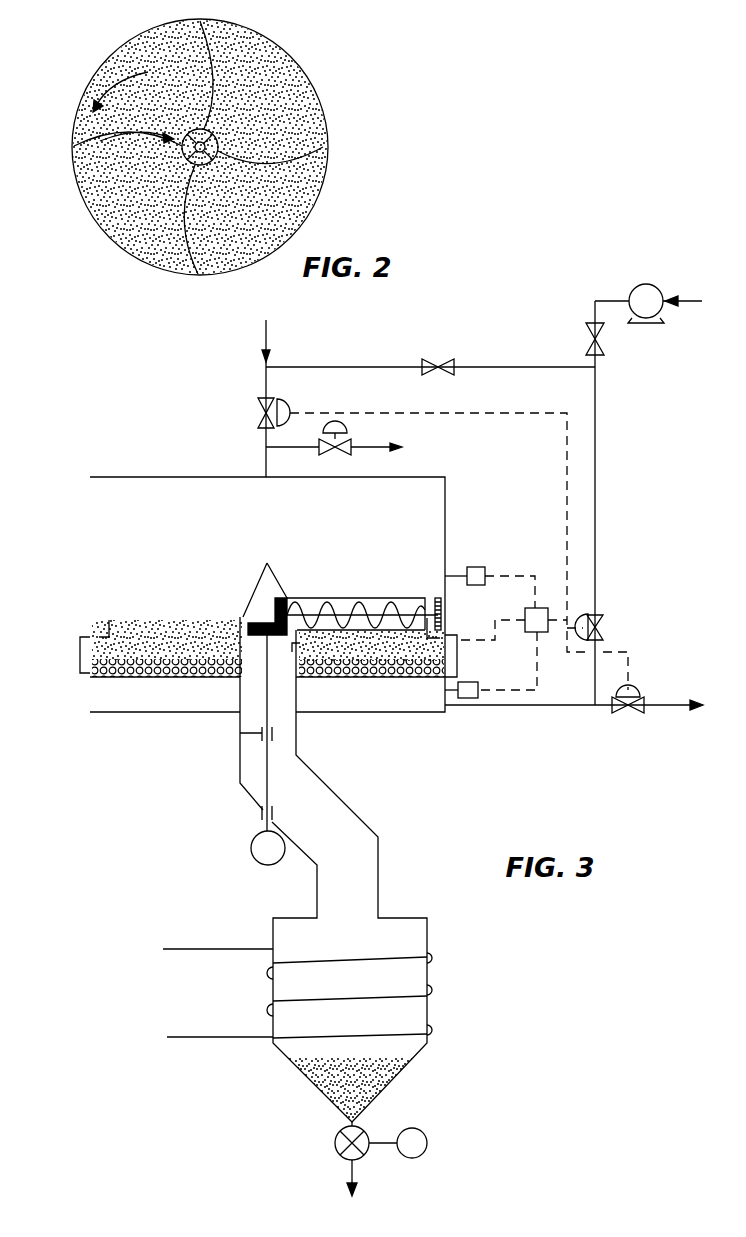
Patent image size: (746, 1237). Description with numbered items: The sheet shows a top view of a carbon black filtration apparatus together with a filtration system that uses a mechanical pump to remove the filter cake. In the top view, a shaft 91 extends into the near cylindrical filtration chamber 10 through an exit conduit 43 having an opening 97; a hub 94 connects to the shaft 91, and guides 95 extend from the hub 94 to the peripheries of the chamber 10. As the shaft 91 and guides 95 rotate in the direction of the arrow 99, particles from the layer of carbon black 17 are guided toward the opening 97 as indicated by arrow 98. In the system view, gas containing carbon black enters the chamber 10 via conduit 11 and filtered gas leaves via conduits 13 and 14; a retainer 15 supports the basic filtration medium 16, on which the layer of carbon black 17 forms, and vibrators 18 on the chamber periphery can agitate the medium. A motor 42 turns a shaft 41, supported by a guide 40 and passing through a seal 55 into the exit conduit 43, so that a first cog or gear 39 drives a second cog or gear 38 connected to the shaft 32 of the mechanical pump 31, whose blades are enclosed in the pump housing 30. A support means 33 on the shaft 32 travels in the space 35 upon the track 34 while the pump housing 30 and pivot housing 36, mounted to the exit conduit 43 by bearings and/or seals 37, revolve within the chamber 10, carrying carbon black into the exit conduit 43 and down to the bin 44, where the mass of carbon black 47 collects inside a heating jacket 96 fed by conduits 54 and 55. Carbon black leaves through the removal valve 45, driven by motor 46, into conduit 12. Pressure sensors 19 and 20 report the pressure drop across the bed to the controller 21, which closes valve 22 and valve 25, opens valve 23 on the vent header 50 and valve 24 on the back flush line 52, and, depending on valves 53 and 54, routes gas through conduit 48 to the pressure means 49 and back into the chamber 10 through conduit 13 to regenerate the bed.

In FIG. 2, the filtration chamber 10 is at (293, 232).
In FIG. 3, the filtration chamber 10 is at (447, 500).
In FIG. 3, the conduit 11 is at (267, 327).
In FIG. 3, the conduit 12 is at (356, 1174).
In FIG. 3, the conduit 13 is at (518, 705).
In FIG. 3, the conduit 14 is at (672, 705).
In FIG. 3, the retainer 15 is at (100, 683).
In FIG. 3, the basic filtration medium 16 is at (95, 673).
In FIG. 3, the layer of particles of carbon black 17 is at (110, 621).
In FIG. 3, the vibrator 18 is at (458, 653).
In FIG. 3, the pressure sensor 19 is at (474, 567).
In FIG. 3, the pressure sensor 20 is at (482, 687).
In FIG. 3, the controller 21 is at (540, 608).
In FIG. 3, the valve 22 is at (285, 411).
In FIG. 3, the valve 23 is at (355, 451).
In FIG. 3, the valve 24 is at (606, 623).
In FIG. 3, the valve 25 is at (635, 690).
In FIG. 3, the pump housing 30 is at (315, 603).
In FIG. 3, the mechanical pump 31 is at (348, 601).
In FIG. 3, the shaft 32 is at (362, 606).
In FIG. 3, the support means 33 is at (436, 597).
In FIG. 3, the track 34 is at (101, 635).
In FIG. 3, the space 35 is at (90, 625).
In FIG. 3, the pivot housing 36 is at (272, 576).
In FIG. 3, the bearings and/or seals 37 is at (307, 662).
In FIG. 3, the second cog or gear 38 is at (275, 603).
In FIG. 3, the first cog or gear 39 is at (253, 626).
In FIG. 3, the guide 40 is at (250, 739).
In FIG. 3, the shaft 41 is at (262, 826).
In FIG. 3, the motor 42 is at (252, 851).
In FIG. 2, the exit conduit 43 is at (220, 137).
In FIG. 3, the bin 44 is at (430, 929).
In FIG. 3, the removal valve 45 is at (335, 1144).
In FIG. 3, the motor 46 is at (427, 1139).
In FIG. 2, the mass of carbon black 47 is at (277, 68).
In FIG. 3, the mass of carbon black 47 is at (395, 1083).
In FIG. 3, the conduit 48 is at (688, 303).
In FIG. 3, the pressure means 49 is at (630, 298).
In FIG. 3, the vent header 50 is at (390, 446).
In FIG. 3, the supply conduit 52 is at (515, 370).
In FIG. 3, the valve 53 is at (438, 358).
In FIG. 3, the valve 54 is at (604, 340).
In FIG. 3, the seal 55 is at (262, 817).
In FIG. 2, the shaft 91 is at (197, 128).
In FIG. 2, the hub 94 is at (205, 165).
In FIG. 2, the guides 95 is at (323, 158).
In FIG. 3, the heating device 96 is at (434, 986).
In FIG. 2, the opening 97 is at (185, 158).
In FIG. 2, the arrow 98 is at (133, 135).
In FIG. 2, the arrow 99 is at (126, 60).